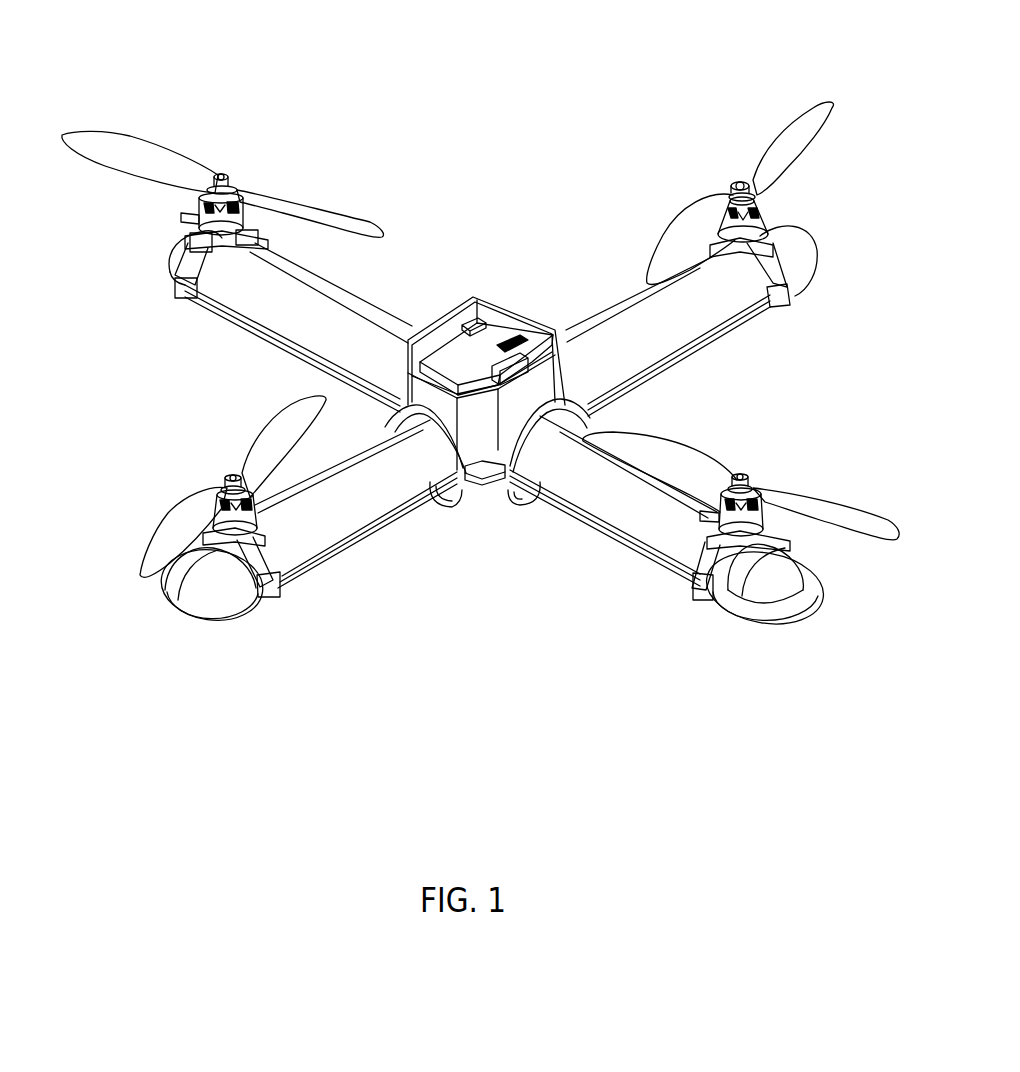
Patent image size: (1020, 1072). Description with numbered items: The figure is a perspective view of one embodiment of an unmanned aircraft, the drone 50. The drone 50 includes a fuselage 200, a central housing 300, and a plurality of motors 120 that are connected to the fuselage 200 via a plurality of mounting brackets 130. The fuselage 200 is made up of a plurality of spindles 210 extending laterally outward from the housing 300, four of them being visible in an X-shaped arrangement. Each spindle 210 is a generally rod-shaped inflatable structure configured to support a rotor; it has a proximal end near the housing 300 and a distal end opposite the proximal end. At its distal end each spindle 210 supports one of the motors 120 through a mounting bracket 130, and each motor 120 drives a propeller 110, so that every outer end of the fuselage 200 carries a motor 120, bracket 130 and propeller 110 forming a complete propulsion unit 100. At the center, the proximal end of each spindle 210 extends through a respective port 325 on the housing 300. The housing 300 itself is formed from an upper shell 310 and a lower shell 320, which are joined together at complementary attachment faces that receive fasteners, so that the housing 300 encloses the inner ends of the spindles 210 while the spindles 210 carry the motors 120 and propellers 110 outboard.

The drone 50 is at (254, 82).
The propulsion assembly 100 is at (872, 294).
The propeller 110 is at (796, 132).
The motor 120 is at (758, 227).
The mounting bracket 130 is at (782, 294).
The fuselage 200 is at (631, 328).
The spindle 210 is at (241, 290).
The housing 300 is at (564, 291).
The upper shell 310 is at (484, 422).
The lower shell 320 is at (507, 500).
The port 325 is at (433, 507).